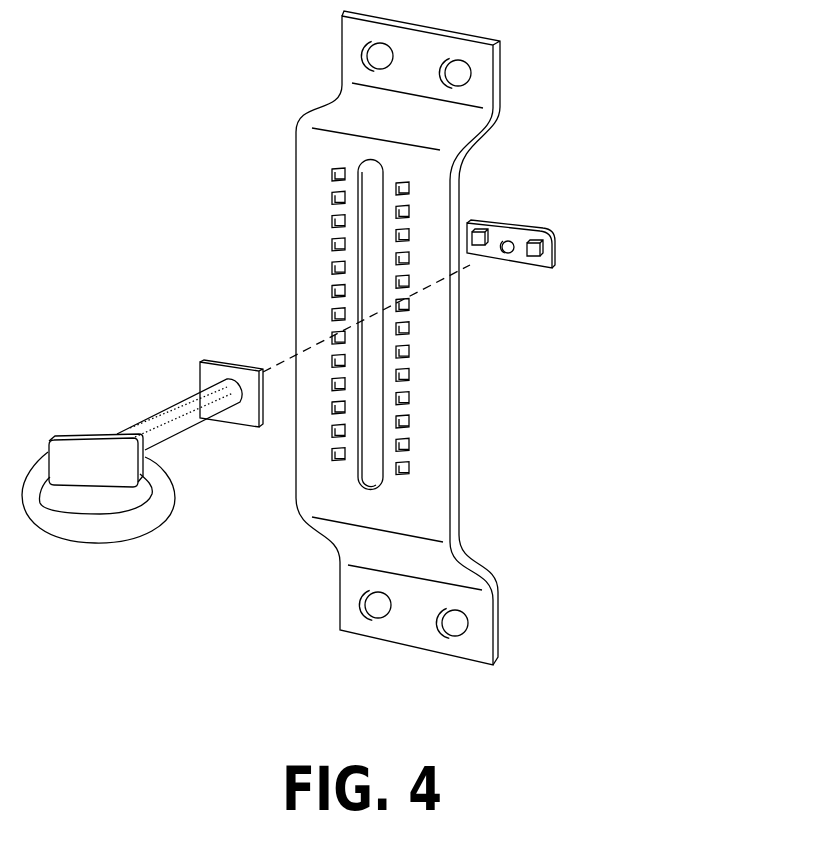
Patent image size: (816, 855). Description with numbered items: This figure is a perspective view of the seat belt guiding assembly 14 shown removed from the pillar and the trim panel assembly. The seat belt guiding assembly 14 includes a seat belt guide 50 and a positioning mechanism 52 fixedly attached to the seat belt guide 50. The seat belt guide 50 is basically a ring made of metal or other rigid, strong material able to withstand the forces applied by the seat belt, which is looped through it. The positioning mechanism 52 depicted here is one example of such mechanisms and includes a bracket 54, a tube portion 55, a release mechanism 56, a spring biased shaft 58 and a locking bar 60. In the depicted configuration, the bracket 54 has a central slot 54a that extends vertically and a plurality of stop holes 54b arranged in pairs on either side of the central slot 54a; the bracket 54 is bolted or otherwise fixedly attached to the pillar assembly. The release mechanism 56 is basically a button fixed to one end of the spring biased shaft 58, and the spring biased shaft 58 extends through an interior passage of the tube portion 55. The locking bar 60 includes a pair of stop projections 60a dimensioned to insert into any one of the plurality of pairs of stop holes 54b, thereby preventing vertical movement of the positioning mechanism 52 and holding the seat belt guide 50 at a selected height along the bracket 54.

The seat belt guiding assembly 14 is at (260, 119).
The seat belt guide 50 is at (158, 522).
The positioning mechanism 52 is at (142, 451).
The bracket 54 is at (438, 415).
The central slot 54a is at (363, 167).
The stop holes 54b is at (330, 220).
The tube portion 55 is at (195, 390).
The release mechanism 56 is at (92, 450).
The spring biased shaft 58 is at (177, 425).
The locking bar 60 is at (511, 253).
The stop projections 60a is at (528, 255).